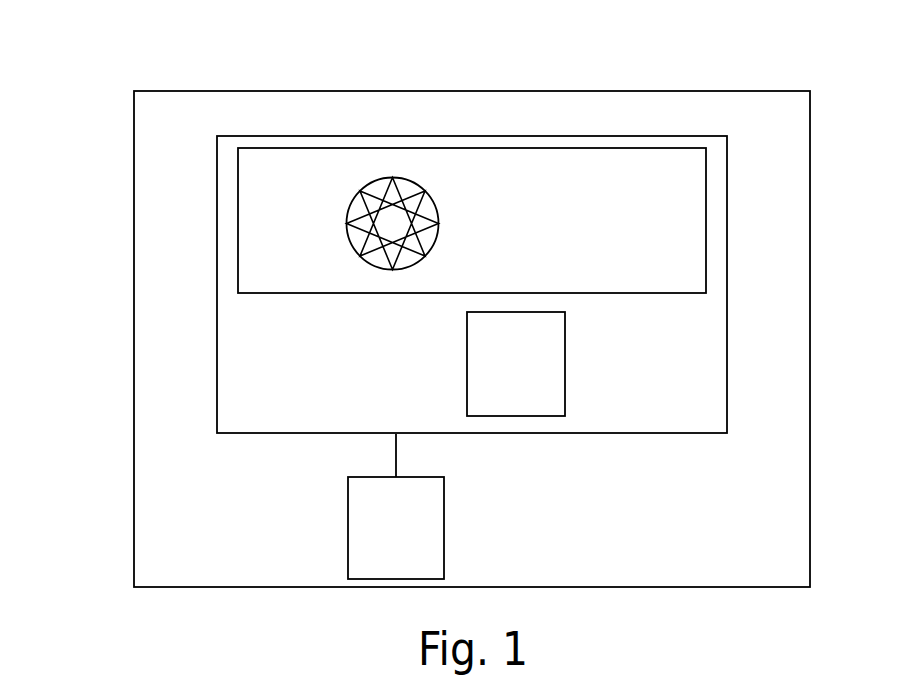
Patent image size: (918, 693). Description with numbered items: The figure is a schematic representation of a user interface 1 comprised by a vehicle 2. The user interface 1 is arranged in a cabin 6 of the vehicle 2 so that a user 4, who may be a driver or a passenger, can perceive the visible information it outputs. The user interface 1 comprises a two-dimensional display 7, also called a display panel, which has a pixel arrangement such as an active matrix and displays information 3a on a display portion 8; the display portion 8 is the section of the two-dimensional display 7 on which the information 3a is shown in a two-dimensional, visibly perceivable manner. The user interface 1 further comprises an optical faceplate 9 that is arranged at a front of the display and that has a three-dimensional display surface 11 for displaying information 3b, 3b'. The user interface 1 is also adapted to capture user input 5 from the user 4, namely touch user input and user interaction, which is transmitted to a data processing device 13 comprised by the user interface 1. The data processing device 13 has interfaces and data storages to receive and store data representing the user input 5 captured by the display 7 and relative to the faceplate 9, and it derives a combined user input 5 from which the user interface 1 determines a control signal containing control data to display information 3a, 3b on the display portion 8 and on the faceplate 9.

The user interface 1 is at (253, 434).
The vehicle 2 is at (134, 338).
The information 3a is at (614, 234).
The information 3b is at (354, 188).
The information 3b' is at (401, 183).
The user 4 is at (404, 544).
The user input 5 is at (393, 452).
The cabin 6 is at (764, 545).
The two-dimensional display 7 is at (267, 293).
The display portion 8 is at (308, 275).
The optical faceplate 9 is at (447, 207).
The three-dimensional display surface 11 is at (390, 258).
The data processing device 13 is at (513, 416).